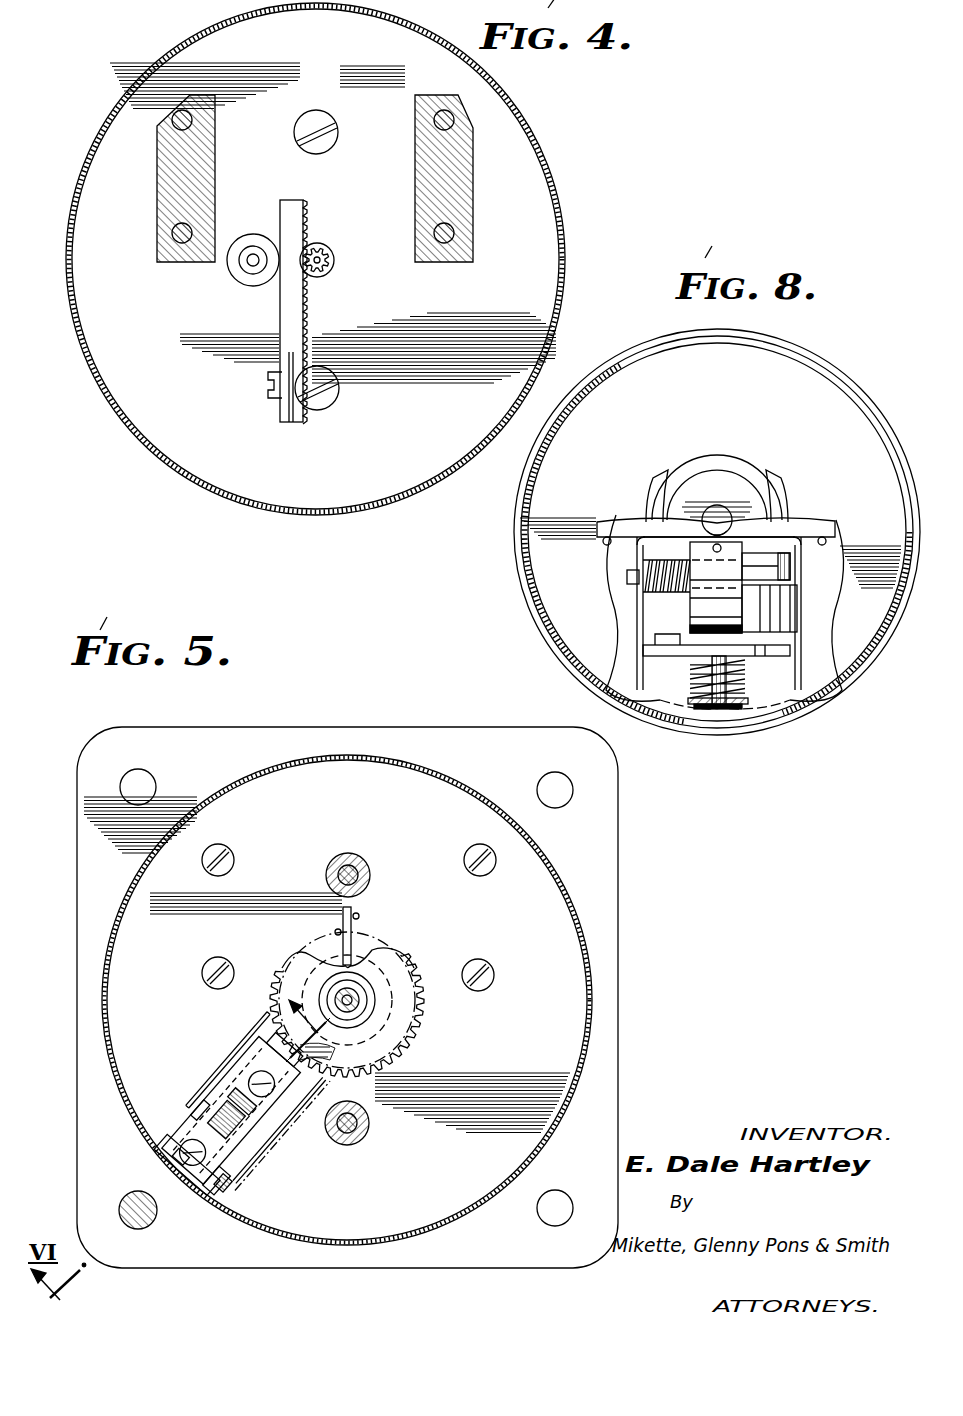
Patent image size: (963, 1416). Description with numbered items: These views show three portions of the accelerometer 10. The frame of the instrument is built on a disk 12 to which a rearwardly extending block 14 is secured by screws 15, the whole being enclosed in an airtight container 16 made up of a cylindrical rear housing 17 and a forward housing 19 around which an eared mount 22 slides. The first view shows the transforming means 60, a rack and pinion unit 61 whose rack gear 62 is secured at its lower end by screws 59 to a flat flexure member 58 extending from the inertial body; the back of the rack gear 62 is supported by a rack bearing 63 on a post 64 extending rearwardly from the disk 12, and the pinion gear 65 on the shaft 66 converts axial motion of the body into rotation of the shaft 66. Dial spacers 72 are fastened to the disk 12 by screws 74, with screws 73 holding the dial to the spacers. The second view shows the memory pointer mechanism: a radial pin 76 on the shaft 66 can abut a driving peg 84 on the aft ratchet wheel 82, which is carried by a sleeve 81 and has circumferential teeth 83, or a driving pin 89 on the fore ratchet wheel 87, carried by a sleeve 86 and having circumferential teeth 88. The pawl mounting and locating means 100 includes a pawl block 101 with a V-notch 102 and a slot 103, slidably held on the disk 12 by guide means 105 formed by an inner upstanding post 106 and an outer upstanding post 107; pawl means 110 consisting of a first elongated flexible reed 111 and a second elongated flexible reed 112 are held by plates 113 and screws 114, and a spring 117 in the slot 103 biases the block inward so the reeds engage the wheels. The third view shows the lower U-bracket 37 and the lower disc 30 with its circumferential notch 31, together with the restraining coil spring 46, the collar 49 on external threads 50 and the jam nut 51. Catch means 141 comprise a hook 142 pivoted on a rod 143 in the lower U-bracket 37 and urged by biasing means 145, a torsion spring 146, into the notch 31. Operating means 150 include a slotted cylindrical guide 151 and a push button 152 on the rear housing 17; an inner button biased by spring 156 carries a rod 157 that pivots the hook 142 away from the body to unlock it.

In FIG. 4, the accelerometer 10 is at (125, 70).
In FIG. 8, the accelerometer 10 is at (858, 368).
In FIG. 5, the accelerometer 10 is at (372, 722).
In FIG. 4, the disk 12 is at (310, 481).
In FIG. 5, the disk 12 is at (347, 792).
In FIG. 4, the rearwardly extending block 14 is at (165, 178).
In FIG. 8, the rearwardly extending block 14 is at (612, 528).
In FIG. 4, the screws 15 is at (176, 118).
In FIG. 5, the screws 15 is at (226, 848).
In FIG. 4, the container 16 is at (552, 140).
In FIG. 8, the rear housing 17 is at (775, 362).
In FIG. 5, the forward housing 19 is at (592, 978).
In FIG. 5, the eared mount 22 is at (600, 891).
In FIG. 8, the lower disc 30 is at (782, 624).
In FIG. 8, the circumferential notch 31 is at (672, 648).
In FIG. 8, the lower U-bracket 37 is at (632, 555).
In FIG. 8, the coil spring 46 is at (658, 672).
In FIG. 8, the collar 49 is at (712, 704).
In FIG. 8, the external threads 50 is at (728, 708).
In FIG. 8, the jam nut 51 is at (708, 672).
In FIG. 4, the flat flexure member 58 is at (289, 408).
In FIG. 4, the screws 59 is at (270, 396).
In FIG. 4, the transforming means 60 is at (301, 303).
In FIG. 4, the rack and pinion unit 61 is at (366, 254).
In FIG. 4, the rack gear 62 is at (284, 318).
In FIG. 4, the rack bearing 63 is at (236, 275).
In FIG. 4, the post 64 is at (254, 254).
In FIG. 4, the pinion gear 65 is at (336, 260).
In FIG. 4, the shaft 66 is at (355, 279).
In FIG. 5, the shaft 66 is at (360, 1003).
In FIG. 5, the dial spacers 72 is at (360, 866).
In FIG. 5, the screws 73 is at (345, 868).
In FIG. 4, the screws 74 is at (320, 120).
In FIG. 5, the radial pin 76 is at (356, 920).
In FIG. 5, the sleeve 81 is at (368, 998).
In FIG. 5, the aft ratchet wheel 82 is at (342, 1064).
In FIG. 5, the circumferential teeth 83 is at (366, 1078).
In FIG. 5, the driving peg 84 is at (338, 930).
In FIG. 5, the sleeve 86 is at (365, 984).
In FIG. 5, the fore ratchet wheel 87 is at (392, 1025).
In FIG. 5, the circumferential teeth 88 is at (283, 962).
In FIG. 5, the driving pin 89 is at (360, 915).
In FIG. 5, the pawl mounting and locating means 100 is at (183, 1148).
In FIG. 5, the pawl block 101 is at (231, 1110).
In FIG. 5, the V-notch 102 is at (228, 1060).
In FIG. 5, the slot 103 is at (282, 1135).
In FIG. 5, the guide means 105 is at (217, 1180).
In FIG. 5, the inner upstanding post 106 is at (261, 1083).
In FIG. 5, the outer upstanding post 107 is at (192, 1152).
In FIG. 5, the pawl means 110 is at (200, 1110).
In FIG. 5, the first elongated flexible reed 111 is at (362, 1128).
In FIG. 5, the second elongated flexible reed 112 is at (279, 1130).
In FIG. 5, the plates 113 is at (229, 1140).
In FIG. 5, the screws 114 is at (235, 1109).
In FIG. 5, the spring 117 is at (180, 1156).
In FIG. 8, the catch means 141 is at (706, 577).
In FIG. 8, the hook 142 is at (703, 626).
In FIG. 8, the rod 143 is at (770, 586).
In FIG. 8, the biasing means 145 is at (628, 578).
In FIG. 8, the torsion spring 146 is at (650, 590).
In FIG. 8, the operating means 150 is at (722, 452).
In FIG. 8, the slotted cylindrical guide 151 is at (652, 500).
In FIG. 8, the push button 152 is at (728, 485).
In FIG. 8, the spring 156 is at (735, 526).
In FIG. 8, the rod 157 is at (705, 532).